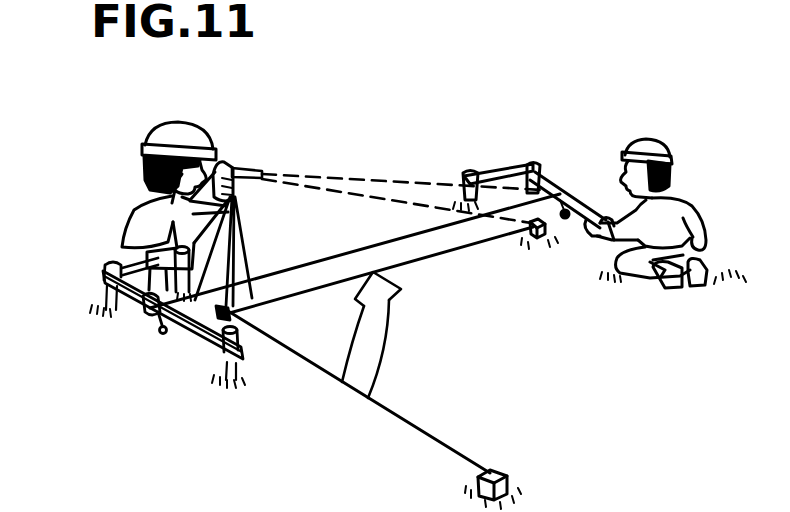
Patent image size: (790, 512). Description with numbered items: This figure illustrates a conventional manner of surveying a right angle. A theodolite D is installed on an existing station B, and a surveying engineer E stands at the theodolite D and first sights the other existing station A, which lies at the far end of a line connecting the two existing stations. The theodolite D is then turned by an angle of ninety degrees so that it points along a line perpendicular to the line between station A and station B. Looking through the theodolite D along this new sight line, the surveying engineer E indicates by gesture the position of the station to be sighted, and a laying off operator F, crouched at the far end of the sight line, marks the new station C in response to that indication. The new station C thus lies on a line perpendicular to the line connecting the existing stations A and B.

The existing station A is at (493, 470).
The existing station B is at (206, 352).
The new station C is at (530, 224).
The theodolite D is at (248, 165).
The surveying engineer E is at (128, 212).
The laying off operator F is at (667, 215).